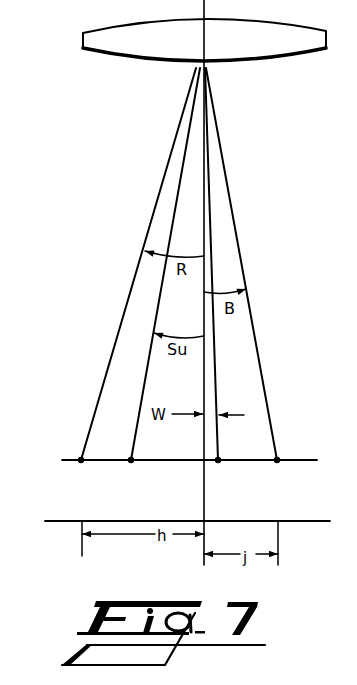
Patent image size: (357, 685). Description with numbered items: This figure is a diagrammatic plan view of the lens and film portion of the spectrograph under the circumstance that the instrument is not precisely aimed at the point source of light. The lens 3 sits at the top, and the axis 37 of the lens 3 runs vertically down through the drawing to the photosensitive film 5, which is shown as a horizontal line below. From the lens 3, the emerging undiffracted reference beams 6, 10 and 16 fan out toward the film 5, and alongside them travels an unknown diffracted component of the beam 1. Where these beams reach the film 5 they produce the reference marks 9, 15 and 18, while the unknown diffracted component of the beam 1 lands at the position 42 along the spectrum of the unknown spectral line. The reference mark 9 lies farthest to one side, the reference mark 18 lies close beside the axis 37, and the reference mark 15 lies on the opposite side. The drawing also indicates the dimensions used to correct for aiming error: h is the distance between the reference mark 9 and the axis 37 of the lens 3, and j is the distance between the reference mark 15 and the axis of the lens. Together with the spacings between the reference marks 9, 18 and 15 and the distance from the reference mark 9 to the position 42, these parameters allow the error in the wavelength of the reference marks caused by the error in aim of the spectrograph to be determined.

The unknown diffracted component of the beam 1 is at (146, 366).
The lens 3 is at (277, 60).
The photosensitive film 5 is at (297, 458).
The emerging undiffracted reference beam 6 is at (110, 357).
The reference mark 9 is at (80, 460).
The emerging undiffracted reference beam 10 is at (237, 222).
The reference mark 15 is at (278, 463).
The emerging undiffracted reference beam 16 is at (224, 264).
The reference mark 18 is at (218, 463).
The axis of the lens 37 is at (203, 192).
The position of the unknown spectral line 42 is at (131, 462).